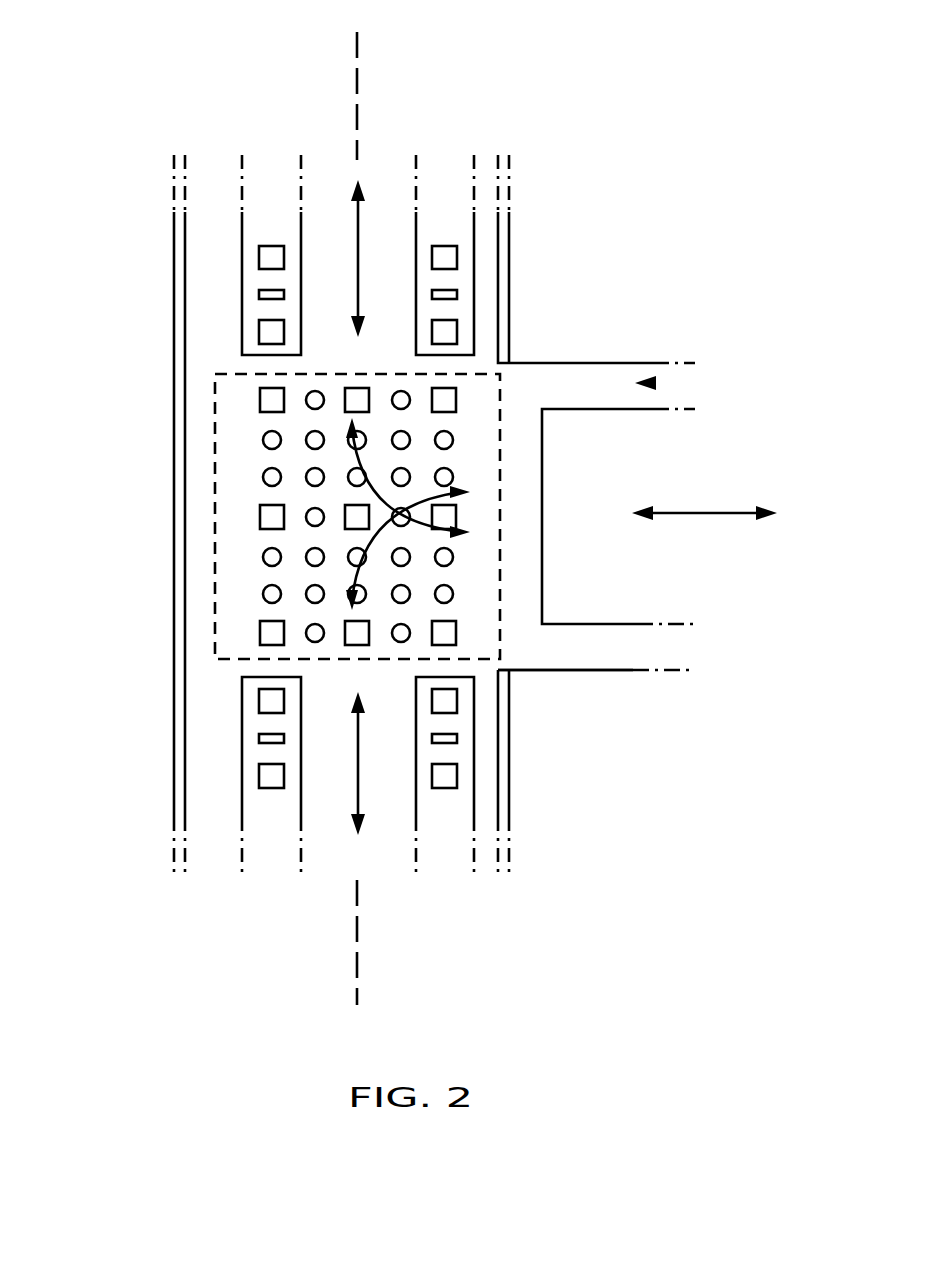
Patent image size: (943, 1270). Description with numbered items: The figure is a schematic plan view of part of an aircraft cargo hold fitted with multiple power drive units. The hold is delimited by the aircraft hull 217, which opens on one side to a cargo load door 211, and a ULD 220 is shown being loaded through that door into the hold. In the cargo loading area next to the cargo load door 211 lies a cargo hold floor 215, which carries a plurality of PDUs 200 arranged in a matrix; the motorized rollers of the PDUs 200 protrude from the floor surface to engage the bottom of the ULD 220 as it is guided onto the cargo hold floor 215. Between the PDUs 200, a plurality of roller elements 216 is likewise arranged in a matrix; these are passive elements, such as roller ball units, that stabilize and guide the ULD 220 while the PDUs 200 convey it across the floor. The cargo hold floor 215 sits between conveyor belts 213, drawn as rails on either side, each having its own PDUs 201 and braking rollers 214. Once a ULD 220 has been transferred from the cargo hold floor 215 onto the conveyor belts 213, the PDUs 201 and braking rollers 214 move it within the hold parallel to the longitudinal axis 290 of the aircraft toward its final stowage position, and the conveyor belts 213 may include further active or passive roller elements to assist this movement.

The PDUs 200 is at (456, 400).
The PDUs 201 is at (276, 257).
The cargo load door 211 is at (655, 383).
The conveyor belts 213 is at (242, 288).
The braking rollers 214 is at (276, 295).
The cargo hold floor 215 is at (500, 425).
The roller elements 216 is at (453, 477).
The aircraft hull 217 is at (174, 593).
The ULD 220 is at (649, 624).
The longitudinal axis 290 is at (357, 63).